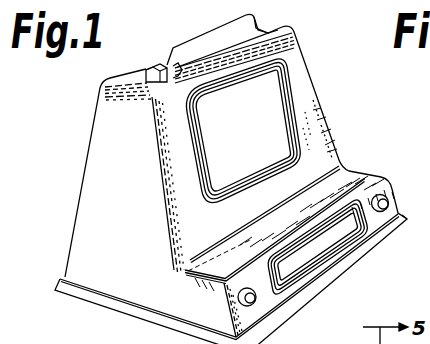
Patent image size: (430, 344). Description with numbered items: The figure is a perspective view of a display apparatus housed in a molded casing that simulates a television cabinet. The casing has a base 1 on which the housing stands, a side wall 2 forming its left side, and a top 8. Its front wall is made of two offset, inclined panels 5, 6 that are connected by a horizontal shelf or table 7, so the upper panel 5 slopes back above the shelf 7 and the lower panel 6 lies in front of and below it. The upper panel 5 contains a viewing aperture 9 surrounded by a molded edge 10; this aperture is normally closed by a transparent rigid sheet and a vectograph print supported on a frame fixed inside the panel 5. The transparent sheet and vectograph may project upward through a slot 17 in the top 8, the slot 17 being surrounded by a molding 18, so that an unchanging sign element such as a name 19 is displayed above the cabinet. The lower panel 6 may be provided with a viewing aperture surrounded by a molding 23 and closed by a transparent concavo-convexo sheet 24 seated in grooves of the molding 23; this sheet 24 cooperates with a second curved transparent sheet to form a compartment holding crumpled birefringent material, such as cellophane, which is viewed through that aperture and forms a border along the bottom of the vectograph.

The base 1 is at (158, 325).
The side wall 2 is at (108, 270).
The inclined panel 5 is at (313, 101).
The inclined panel 6 is at (390, 196).
The horizontal shelf or table 7 is at (359, 176).
The top 8 is at (135, 77).
The viewing aperture 9 is at (275, 133).
The molded edge 10 is at (296, 150).
The slot 17 is at (177, 72).
The molding 18 is at (160, 70).
The name 19 is at (206, 41).
The molding 23 is at (273, 295).
The transparent concavo-convexo sheet 24 is at (302, 267).